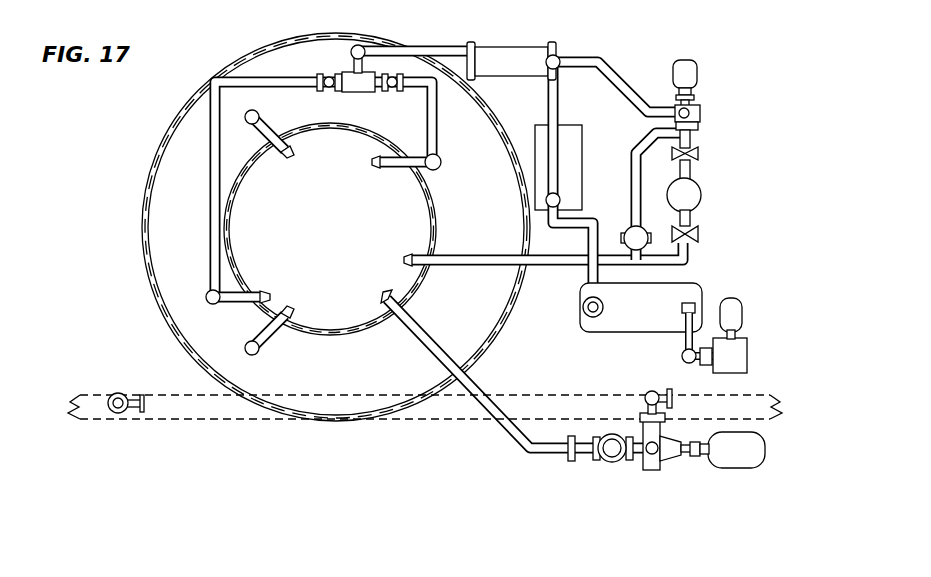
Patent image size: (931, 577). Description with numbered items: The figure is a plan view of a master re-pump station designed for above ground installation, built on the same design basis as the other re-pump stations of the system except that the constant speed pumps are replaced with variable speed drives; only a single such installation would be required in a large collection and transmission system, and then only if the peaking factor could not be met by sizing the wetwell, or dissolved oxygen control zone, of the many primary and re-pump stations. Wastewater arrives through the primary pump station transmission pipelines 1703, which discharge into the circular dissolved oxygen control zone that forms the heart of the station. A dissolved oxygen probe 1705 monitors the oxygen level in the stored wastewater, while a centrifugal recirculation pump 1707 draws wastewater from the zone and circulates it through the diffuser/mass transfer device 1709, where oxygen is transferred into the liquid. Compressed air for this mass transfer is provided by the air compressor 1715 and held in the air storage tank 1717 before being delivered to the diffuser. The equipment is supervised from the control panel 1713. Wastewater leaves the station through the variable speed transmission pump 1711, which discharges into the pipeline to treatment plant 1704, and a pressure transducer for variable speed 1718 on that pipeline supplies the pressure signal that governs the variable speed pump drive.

The primary pump station transmission pipelines 1703 is at (292, 158).
The pipeline to treatment plant 1704 is at (425, 407).
The dissolved oxygen probe 1705 is at (706, 200).
The centrifugal recirculation pump 1707 is at (702, 76).
The diffuser/mass transfer device 1709 is at (511, 56).
The variable speed transmission pump 1711 is at (732, 472).
The control panel 1713 is at (587, 158).
The air compressor 1715 is at (752, 354).
The air storage tank 1717 is at (645, 344).
The pressure transducer for variable speed 1718 is at (118, 391).